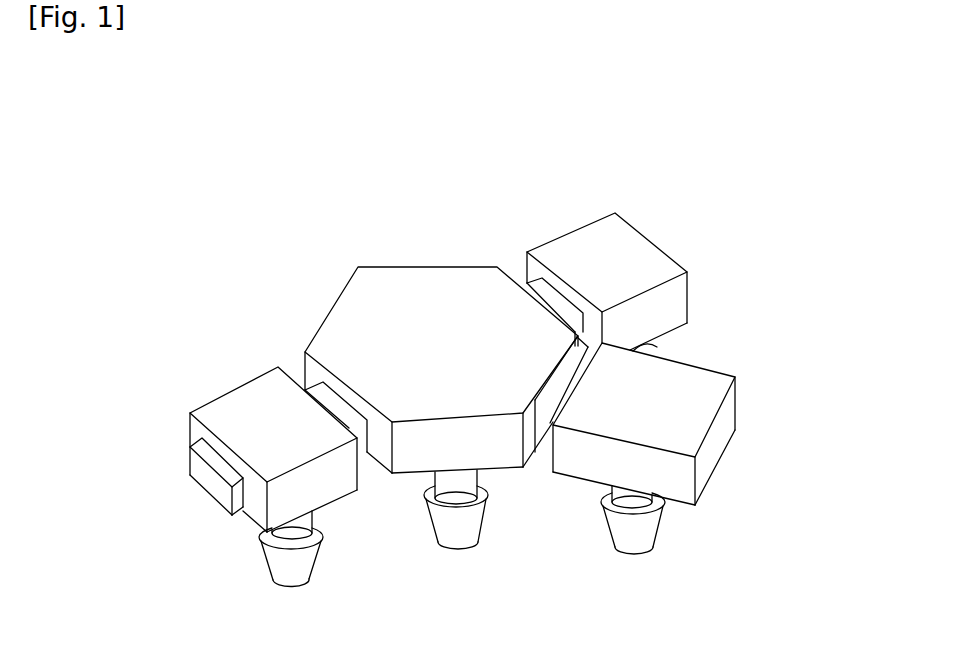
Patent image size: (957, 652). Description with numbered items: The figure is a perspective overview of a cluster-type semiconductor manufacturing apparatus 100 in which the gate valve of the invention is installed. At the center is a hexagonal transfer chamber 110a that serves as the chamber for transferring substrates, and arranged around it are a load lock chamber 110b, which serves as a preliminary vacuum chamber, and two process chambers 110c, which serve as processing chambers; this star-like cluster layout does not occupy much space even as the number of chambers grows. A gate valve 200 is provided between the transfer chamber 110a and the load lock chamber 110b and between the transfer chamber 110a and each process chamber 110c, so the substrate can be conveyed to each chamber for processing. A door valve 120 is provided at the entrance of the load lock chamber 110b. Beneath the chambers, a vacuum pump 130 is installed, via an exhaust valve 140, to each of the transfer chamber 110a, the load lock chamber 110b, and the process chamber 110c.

The semiconductor manufacturing apparatus 100 is at (716, 136).
The transfer chamber 110a is at (428, 278).
The load lock chamber 110b is at (238, 397).
The process chamber 110c is at (650, 250).
The door valve 120 is at (213, 485).
The vacuum pump 130 is at (303, 563).
The exhaust valve 140 is at (290, 527).
The gate valve 200 is at (540, 293).